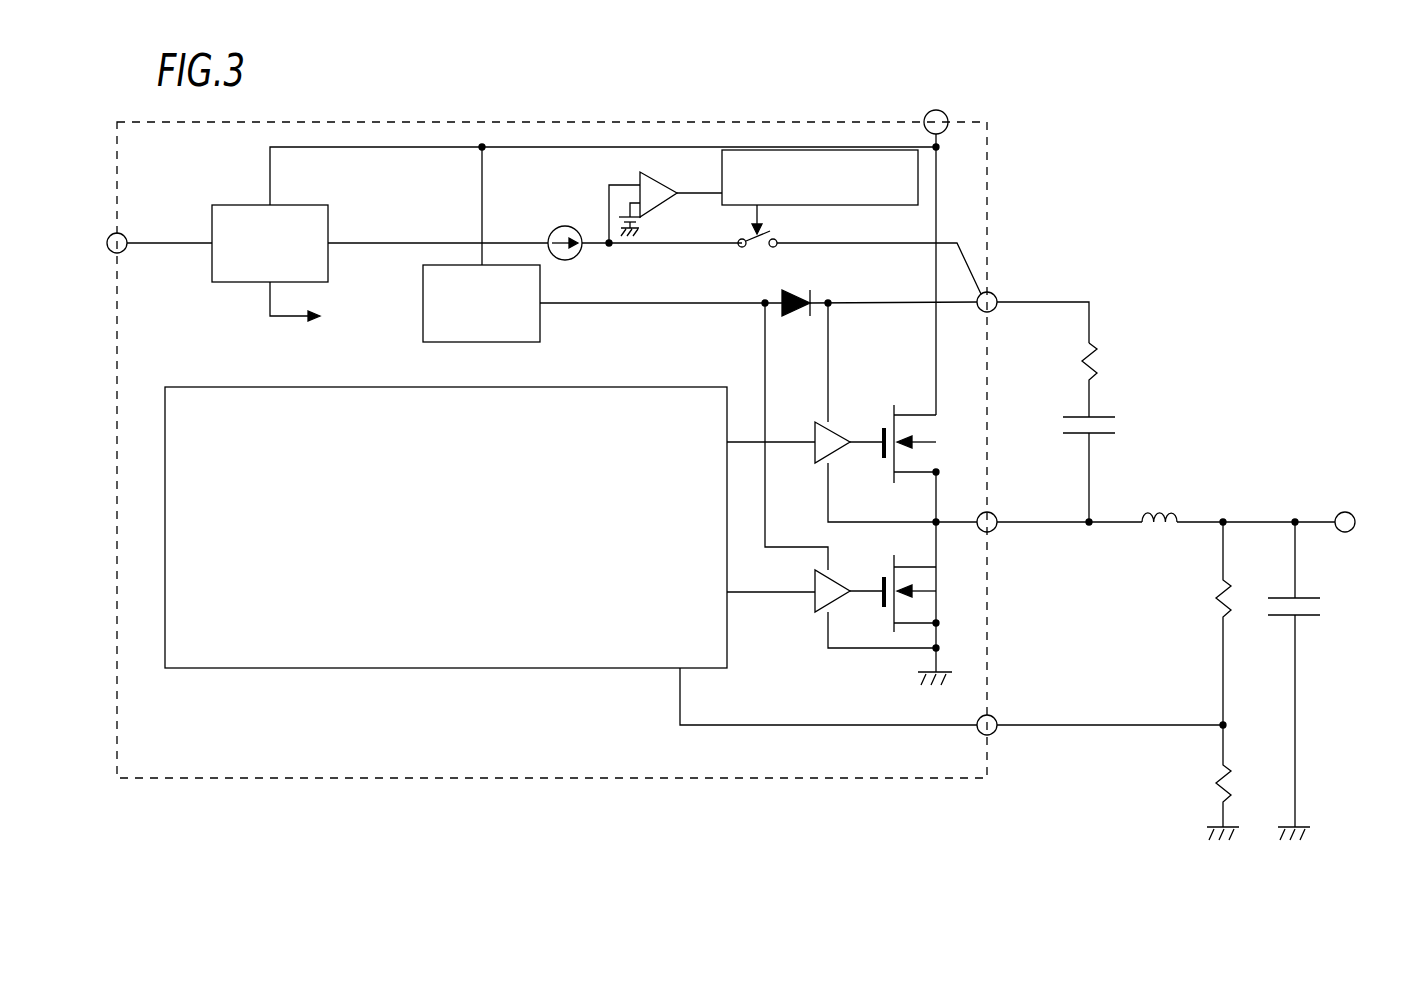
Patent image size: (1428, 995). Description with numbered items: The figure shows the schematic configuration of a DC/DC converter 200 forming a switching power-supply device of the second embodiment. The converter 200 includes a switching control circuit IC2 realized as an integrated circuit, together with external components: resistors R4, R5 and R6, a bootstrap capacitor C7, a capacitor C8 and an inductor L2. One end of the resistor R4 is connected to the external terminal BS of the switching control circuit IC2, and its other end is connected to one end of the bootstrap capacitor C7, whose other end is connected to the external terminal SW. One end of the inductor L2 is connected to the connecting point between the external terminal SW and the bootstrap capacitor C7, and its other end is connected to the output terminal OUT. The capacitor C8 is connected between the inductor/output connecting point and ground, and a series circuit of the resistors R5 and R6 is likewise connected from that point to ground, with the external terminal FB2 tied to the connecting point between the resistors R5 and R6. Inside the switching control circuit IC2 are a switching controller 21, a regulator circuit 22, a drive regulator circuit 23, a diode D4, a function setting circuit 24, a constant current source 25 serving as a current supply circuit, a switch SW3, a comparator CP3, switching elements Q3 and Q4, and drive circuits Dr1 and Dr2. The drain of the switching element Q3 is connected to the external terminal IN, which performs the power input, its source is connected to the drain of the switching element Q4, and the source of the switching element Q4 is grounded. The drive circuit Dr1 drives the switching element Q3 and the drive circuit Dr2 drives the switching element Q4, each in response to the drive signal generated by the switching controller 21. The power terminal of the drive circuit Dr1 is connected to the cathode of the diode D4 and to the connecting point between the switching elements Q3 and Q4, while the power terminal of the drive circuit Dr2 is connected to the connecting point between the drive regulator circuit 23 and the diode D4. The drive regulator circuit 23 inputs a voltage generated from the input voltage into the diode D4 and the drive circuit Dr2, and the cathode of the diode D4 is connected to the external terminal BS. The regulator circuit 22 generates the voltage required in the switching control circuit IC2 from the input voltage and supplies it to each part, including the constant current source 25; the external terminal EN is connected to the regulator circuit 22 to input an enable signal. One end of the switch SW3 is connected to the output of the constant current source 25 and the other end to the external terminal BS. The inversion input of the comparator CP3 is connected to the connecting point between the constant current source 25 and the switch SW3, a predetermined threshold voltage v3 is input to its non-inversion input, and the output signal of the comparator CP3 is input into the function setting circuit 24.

The DC/DC converter 200 is at (1048, 148).
The switching control circuit IC2 is at (668, 122).
The switching controller 21 is at (367, 668).
The regulator circuit 22 is at (328, 208).
The drive regulator circuit 23 is at (422, 287).
The function setting circuit 24 is at (868, 207).
The constant current source 25 is at (565, 226).
The comparator CP3 is at (660, 185).
The threshold voltage v3 is at (640, 226).
The switch SW3 is at (762, 247).
The diode D4 is at (795, 318).
The drive circuit Dr1 is at (835, 430).
The drive circuit Dr2 is at (836, 580).
The switching element Q3 is at (932, 440).
The switching element Q4 is at (932, 590).
The resistor R4 is at (1100, 352).
The bootstrap capacitor C7 is at (1103, 417).
The inductor L2 is at (1162, 512).
The resistor R5 is at (1228, 617).
The resistor R6 is at (1230, 802).
The capacitor C8 is at (1310, 618).
The external terminal EN is at (107, 240).
The external terminal IN is at (937, 110).
The external terminal BS is at (998, 294).
The external terminal SW is at (998, 514).
The external terminal FB2 is at (999, 719).
The output terminal OUT is at (1346, 512).